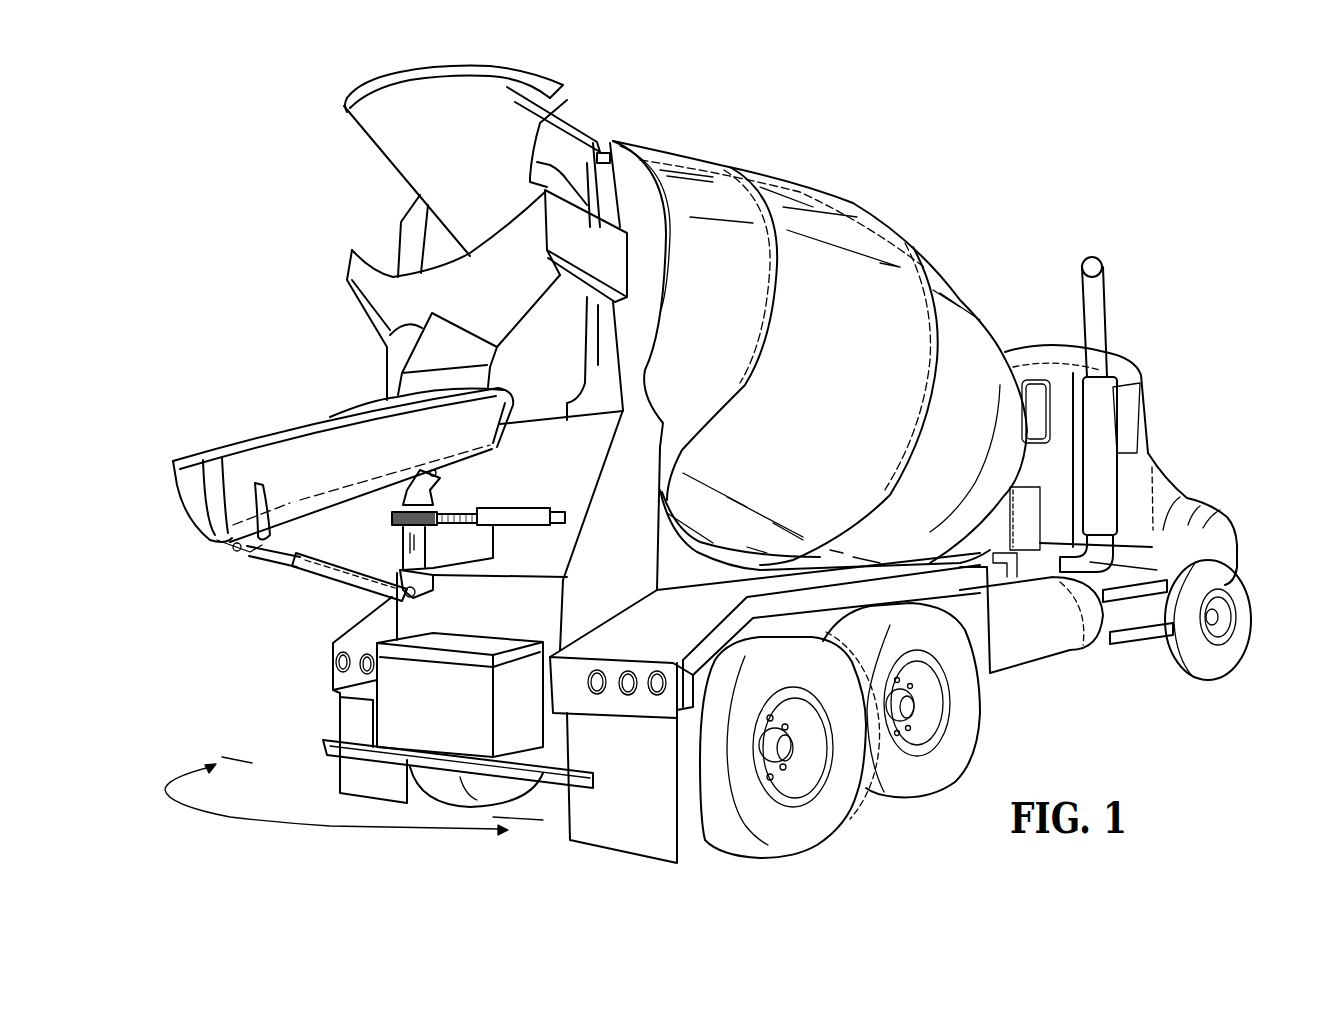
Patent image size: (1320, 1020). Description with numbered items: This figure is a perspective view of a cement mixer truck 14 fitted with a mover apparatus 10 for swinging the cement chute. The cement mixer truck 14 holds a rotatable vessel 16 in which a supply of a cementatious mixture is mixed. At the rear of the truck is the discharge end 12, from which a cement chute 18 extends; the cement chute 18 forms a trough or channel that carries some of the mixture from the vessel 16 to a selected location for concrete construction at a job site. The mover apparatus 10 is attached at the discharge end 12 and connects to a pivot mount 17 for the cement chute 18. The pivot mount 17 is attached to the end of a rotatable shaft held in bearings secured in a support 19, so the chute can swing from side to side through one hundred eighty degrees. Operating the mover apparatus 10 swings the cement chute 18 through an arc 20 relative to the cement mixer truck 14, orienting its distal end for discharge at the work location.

The mover apparatus 10 is at (378, 521).
The discharge end 12 is at (363, 627).
The cement mixer truck 14 is at (1017, 350).
The rotatable vessel 16 is at (820, 200).
The pivot mount 17 is at (447, 500).
The cement chute 18 is at (310, 447).
The support 19 is at (440, 508).
The arc 20 is at (268, 818).